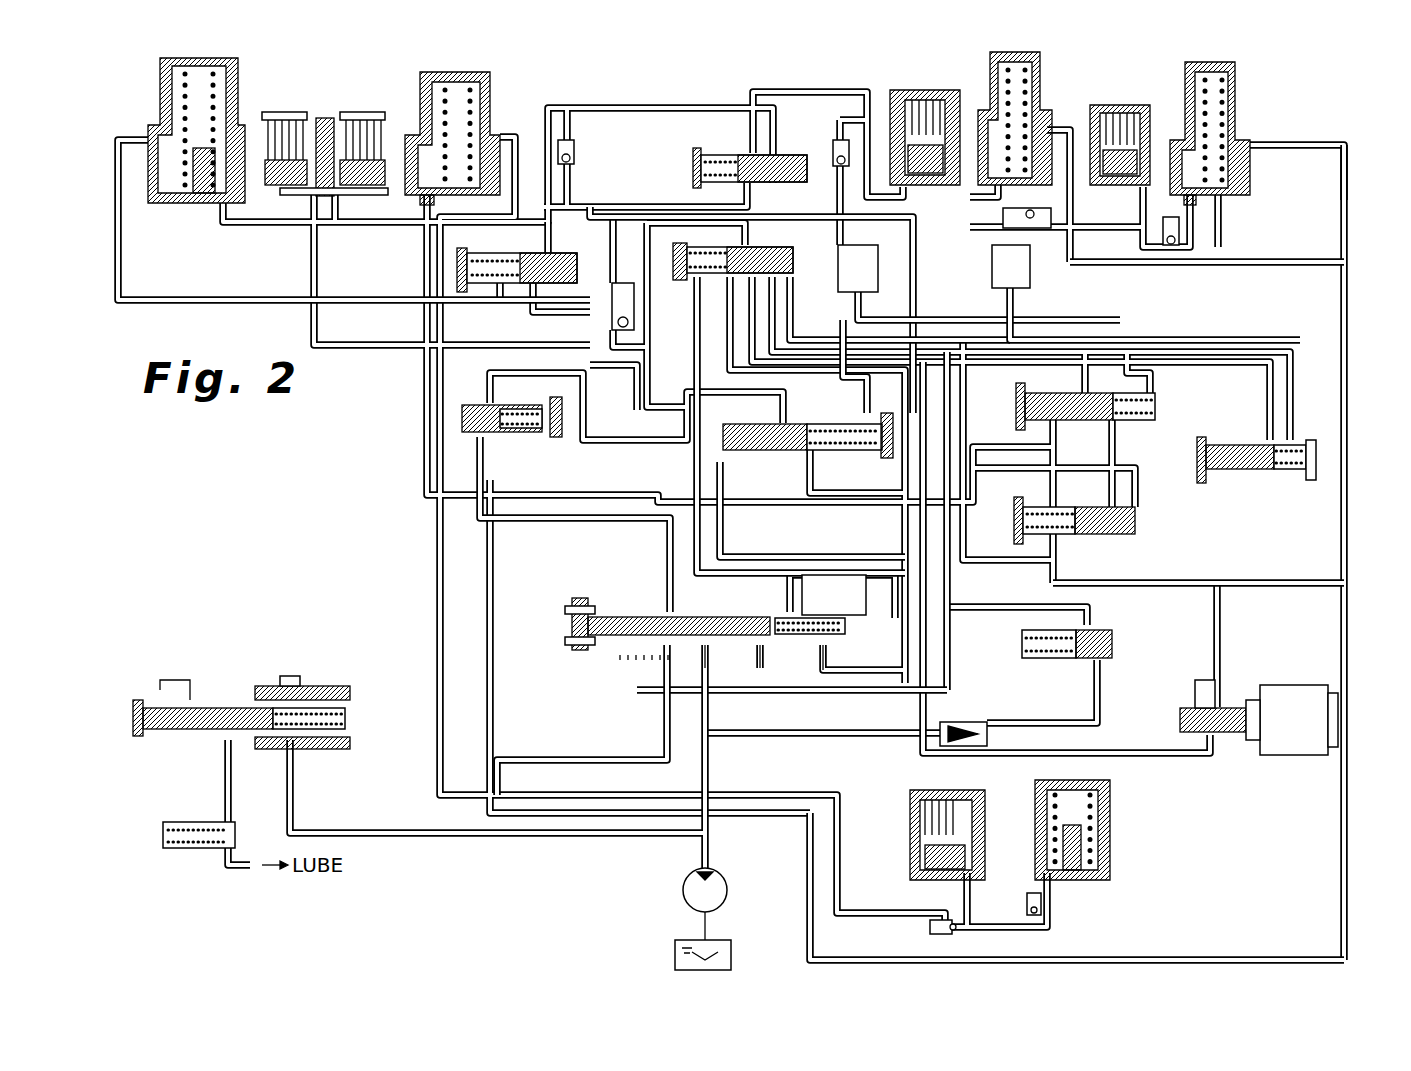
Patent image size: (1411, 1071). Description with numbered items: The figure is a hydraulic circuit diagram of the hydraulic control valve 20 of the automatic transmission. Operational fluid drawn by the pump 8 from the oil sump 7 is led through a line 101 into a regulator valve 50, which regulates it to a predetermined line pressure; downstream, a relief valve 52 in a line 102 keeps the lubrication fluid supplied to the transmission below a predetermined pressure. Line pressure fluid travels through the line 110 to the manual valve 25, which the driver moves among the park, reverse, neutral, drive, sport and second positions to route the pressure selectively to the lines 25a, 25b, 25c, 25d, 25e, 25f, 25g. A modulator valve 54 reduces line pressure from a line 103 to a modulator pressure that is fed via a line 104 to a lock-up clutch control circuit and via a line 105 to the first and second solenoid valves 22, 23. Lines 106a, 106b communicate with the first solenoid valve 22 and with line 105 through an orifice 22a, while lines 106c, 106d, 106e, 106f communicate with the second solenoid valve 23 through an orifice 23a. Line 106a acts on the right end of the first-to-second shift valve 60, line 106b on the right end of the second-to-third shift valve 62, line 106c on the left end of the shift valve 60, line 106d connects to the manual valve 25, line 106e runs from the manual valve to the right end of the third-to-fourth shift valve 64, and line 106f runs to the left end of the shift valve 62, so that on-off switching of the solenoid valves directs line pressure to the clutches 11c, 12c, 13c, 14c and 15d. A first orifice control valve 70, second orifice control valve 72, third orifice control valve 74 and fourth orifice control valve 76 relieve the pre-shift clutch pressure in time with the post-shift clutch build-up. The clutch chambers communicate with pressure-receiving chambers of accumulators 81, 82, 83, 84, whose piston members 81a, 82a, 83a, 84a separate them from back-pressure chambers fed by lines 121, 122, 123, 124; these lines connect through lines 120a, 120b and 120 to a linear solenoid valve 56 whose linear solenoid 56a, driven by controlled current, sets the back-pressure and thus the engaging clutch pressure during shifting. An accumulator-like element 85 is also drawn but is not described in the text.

The hydraulic control valve 20 is at (277, 465).
The accumulator 82 is at (240, 73).
The piston member 82a is at (193, 207).
The second clutch 12c is at (285, 112).
The fourth clutch 14c is at (365, 110).
The accumulator 84 is at (485, 76).
The piston member 84a is at (424, 205).
The 3-4 shift valve 64 is at (728, 150).
The third clutch 13c is at (920, 95).
The accumulator 83 is at (1052, 70).
The piston member 83a is at (1015, 187).
The first clutch 11c is at (1120, 105).
The accumulator 81 is at (1252, 100).
The piston member 81a is at (1200, 200).
The line 121 is at (1295, 150).
The line 122 is at (243, 300).
The line 123 is at (1248, 262).
The line 124 is at (447, 256).
The fourth orifice control valve 76 is at (515, 298).
The 2-3 shift valve 62 is at (684, 284).
The line 106b is at (790, 298).
The line 106e is at (910, 219).
The line 106f is at (694, 369).
The line 106a is at (873, 392).
The line 106c is at (793, 553).
The line 106d is at (935, 650).
The first solenoid valve 22 is at (856, 242).
The orifice 22a is at (870, 313).
The second solenoid valve 23 is at (1016, 264).
The orifice 23a is at (1000, 328).
The third orifice control valve 74 is at (1162, 397).
The first orifice control valve 70 is at (1256, 488).
The second orifice control valve 72 is at (1142, 530).
The 1-2 shift valve 60 is at (840, 458).
The line 105 is at (950, 580).
The line 120 is at (1290, 582).
The line 120a is at (1348, 475).
The line 120b is at (1348, 785).
The manual valve 25 is at (640, 590).
The line 25a is at (673, 606).
The line 25b is at (790, 606).
The line 25c is at (852, 610).
The line 25d is at (665, 668).
The line 25e is at (706, 666).
The line 25f is at (763, 655).
The line 25g is at (830, 666).
The modulator valve 54 is at (1110, 632).
The linear solenoid valve 56 is at (1242, 680).
The linear solenoid 56a is at (1290, 690).
The regulator valve 50 is at (255, 662).
The relief valve 52 is at (190, 856).
The line 101 is at (483, 838).
The line 102 is at (240, 870).
The line 103 is at (1020, 722).
The line 104 is at (845, 692).
The line 110 is at (710, 708).
The hydraulic clutch 15d is at (967, 793).
The accumulator 85 is at (1113, 810).
The pump 8 is at (727, 884).
The oil sump 7 is at (732, 958).